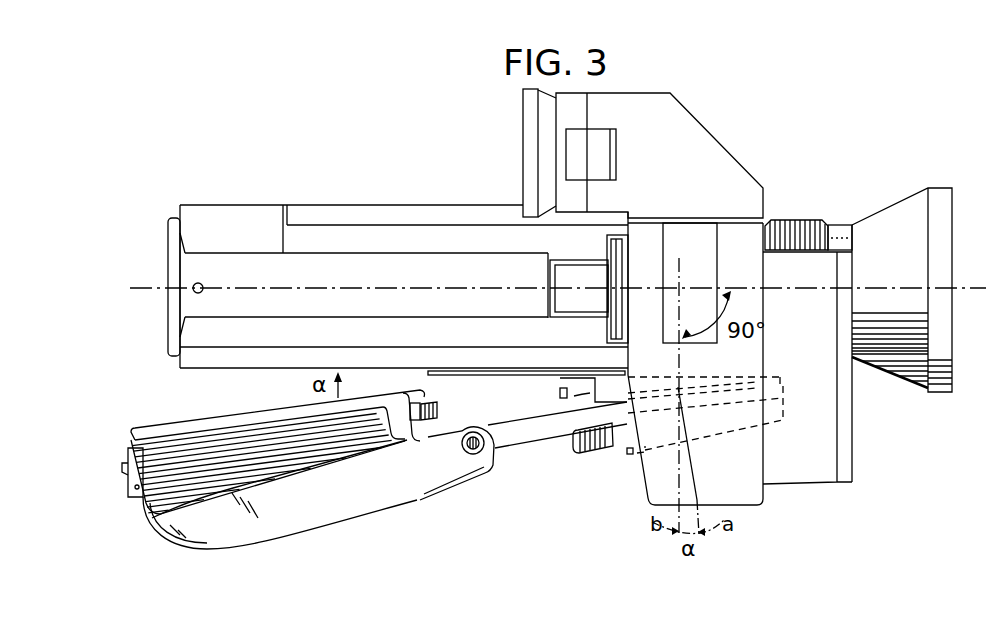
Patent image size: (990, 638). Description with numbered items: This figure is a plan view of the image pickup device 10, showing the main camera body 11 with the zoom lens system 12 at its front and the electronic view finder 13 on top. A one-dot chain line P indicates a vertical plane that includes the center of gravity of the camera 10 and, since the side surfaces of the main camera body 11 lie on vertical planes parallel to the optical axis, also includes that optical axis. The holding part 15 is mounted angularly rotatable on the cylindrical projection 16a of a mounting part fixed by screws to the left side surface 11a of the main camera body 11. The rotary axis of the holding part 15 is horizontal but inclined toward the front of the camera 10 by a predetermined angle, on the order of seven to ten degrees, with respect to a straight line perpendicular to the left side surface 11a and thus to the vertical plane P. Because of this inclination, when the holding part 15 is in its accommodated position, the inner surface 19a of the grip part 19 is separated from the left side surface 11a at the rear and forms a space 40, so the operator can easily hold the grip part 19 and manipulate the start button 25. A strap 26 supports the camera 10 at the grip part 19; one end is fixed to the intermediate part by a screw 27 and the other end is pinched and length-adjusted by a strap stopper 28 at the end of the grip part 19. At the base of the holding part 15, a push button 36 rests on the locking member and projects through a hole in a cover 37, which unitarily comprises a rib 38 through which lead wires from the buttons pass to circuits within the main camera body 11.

The image pickup device 10 is at (403, 107).
The main camera body 11 is at (334, 262).
The left side surface 11a is at (493, 377).
The zoom lens system 12 is at (791, 222).
The electronic view finder 13 is at (712, 134).
The holding part 15 is at (485, 480).
The cylindrical projection 16a is at (593, 394).
The grip part 19 is at (263, 423).
The inner surface 19a is at (163, 421).
The start button 25 is at (423, 421).
The strap 26 is at (308, 528).
The screw 27 is at (484, 431).
The strap stopper 28 is at (130, 487).
The push button 36 is at (630, 455).
The cover 37 is at (593, 453).
The rib 38 is at (543, 441).
The space 40 is at (202, 393).
The vertical plane P is at (968, 293).